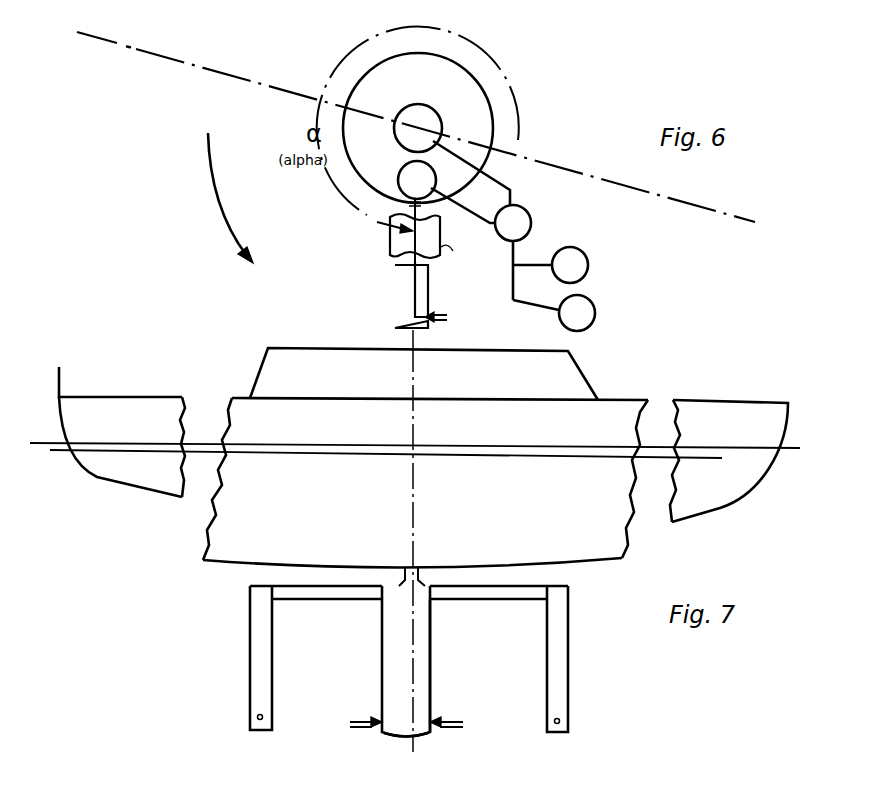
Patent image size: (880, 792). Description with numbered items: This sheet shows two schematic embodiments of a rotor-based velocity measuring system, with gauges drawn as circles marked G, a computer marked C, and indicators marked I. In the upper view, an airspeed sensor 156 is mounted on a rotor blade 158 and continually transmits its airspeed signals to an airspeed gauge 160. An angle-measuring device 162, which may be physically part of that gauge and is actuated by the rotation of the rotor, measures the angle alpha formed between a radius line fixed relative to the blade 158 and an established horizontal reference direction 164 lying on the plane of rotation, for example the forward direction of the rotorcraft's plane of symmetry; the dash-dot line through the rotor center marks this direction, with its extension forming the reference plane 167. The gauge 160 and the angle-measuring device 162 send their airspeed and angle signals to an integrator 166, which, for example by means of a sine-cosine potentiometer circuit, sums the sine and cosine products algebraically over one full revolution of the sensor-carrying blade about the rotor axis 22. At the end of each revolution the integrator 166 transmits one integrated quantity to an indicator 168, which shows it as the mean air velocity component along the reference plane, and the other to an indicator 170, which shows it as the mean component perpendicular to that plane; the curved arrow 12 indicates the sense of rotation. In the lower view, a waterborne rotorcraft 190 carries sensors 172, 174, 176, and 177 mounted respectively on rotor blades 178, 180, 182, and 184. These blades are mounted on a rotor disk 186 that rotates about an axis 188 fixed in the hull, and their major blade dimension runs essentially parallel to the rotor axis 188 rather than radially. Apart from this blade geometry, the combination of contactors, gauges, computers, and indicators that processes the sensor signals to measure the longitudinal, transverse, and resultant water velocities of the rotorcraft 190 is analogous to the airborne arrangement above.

In FIG. 6, the vessel 12 is at (221, 208).
In FIG. 6, the rotor axis 22 is at (430, 124).
In FIG. 6, the airspeed sensor 156 is at (447, 315).
In FIG. 6, the rotor blade 158 is at (429, 268).
In FIG. 6, the airspeed gauge 160 is at (436, 173).
In FIG. 6, the angle-measuring device 162 is at (429, 109).
In FIG. 6, the horizontal reference direction 164 is at (729, 215).
In FIG. 6, the integrator 166 is at (531, 212).
In FIG. 6, the reference plane 167 is at (116, 47).
In FIG. 6, the indicator 168 is at (588, 268).
In FIG. 6, the indicator 170 is at (595, 312).
In FIG. 7, the sensor 172 is at (442, 718).
In FIG. 7, the sensor 174 is at (372, 720).
In FIG. 7, the sensor 176 is at (560, 720).
In FIG. 7, the sensor 177 is at (257, 718).
In FIG. 7, the rotor blade 178 is at (380, 652).
In FIG. 7, the rotor blade 180 is at (430, 661).
In FIG. 7, the rotor blade 182 is at (568, 645).
In FIG. 7, the rotor blade 184 is at (254, 650).
In FIG. 7, the rotor disk 186 is at (570, 590).
In FIG. 7, the rotor axis 188 is at (415, 539).
In FIG. 7, the waterborne rotorcraft 190 is at (157, 396).